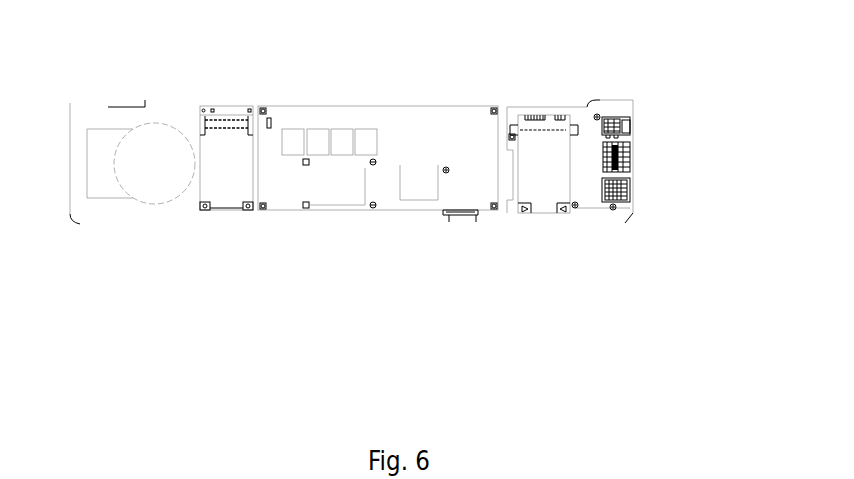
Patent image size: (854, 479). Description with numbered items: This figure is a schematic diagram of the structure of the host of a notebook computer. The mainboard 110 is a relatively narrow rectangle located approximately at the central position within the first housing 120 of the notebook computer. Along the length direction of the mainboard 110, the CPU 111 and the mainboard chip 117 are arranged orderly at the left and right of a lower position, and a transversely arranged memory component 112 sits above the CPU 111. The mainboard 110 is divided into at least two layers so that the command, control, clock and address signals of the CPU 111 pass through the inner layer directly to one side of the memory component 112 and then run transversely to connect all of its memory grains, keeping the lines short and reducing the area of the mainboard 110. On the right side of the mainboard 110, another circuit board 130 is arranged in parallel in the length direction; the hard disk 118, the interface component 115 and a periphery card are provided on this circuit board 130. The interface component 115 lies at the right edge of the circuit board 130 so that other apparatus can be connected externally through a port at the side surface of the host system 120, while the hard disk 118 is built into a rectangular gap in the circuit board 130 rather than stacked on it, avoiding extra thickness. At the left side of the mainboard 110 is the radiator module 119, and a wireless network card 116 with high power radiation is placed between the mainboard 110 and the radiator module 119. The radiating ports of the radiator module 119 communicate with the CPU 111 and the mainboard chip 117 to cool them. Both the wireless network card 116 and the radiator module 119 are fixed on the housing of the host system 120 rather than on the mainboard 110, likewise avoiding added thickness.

The mainboard 110 is at (407, 138).
The CPU 111 is at (337, 190).
The memory component 112 is at (342, 140).
The interface component 115 is at (625, 152).
The wireless network card 116 is at (218, 145).
The mainboard chip 117 is at (420, 190).
The hard disk 118 is at (544, 154).
The radiator module 119 is at (117, 155).
The first housing 120 is at (478, 98).
The circuit board 130 is at (588, 148).